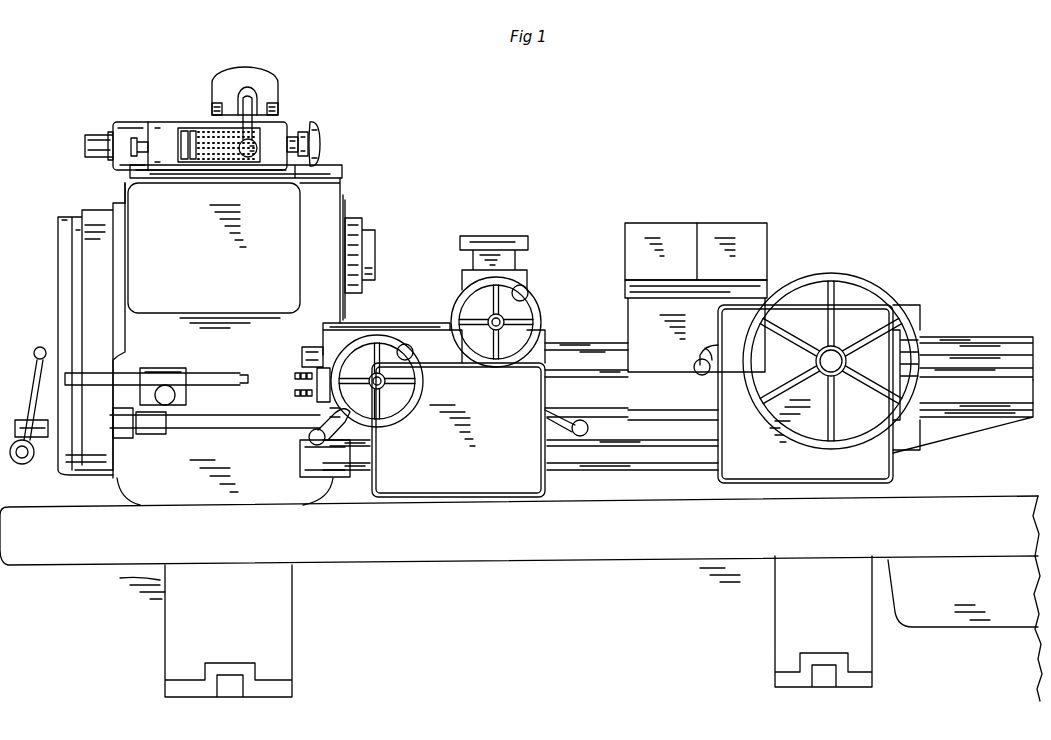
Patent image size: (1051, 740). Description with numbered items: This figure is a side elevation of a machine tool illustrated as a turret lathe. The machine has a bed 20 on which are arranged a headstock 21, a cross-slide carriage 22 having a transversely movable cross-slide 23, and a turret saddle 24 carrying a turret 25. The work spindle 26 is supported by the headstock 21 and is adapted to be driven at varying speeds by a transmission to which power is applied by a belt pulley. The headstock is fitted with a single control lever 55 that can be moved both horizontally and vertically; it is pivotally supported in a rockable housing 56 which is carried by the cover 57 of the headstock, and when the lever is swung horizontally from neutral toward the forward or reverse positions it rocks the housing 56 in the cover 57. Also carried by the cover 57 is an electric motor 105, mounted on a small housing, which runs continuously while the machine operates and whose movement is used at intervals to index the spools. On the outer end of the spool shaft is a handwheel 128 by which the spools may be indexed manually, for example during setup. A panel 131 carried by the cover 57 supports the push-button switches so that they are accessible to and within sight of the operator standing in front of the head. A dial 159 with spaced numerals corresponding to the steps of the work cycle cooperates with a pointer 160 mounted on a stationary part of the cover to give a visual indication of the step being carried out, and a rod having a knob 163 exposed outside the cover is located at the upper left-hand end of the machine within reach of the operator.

The bed 20 is at (955, 340).
The headstock 21 is at (335, 185).
The cross-slide carriage 22 is at (413, 322).
The cross-slide 23 is at (520, 282).
The turret saddle 24 is at (860, 312).
The turret 25 is at (745, 228).
The work spindle 26 is at (372, 247).
The control lever 55 is at (248, 158).
The rockable housing 56 is at (268, 85).
The cover 57 is at (163, 120).
The electric motor 105 is at (95, 133).
The handwheel 128 is at (320, 128).
The panel 131 is at (222, 165).
The dial 159 is at (303, 135).
The pointer 160 is at (293, 140).
The knob 163 is at (133, 137).